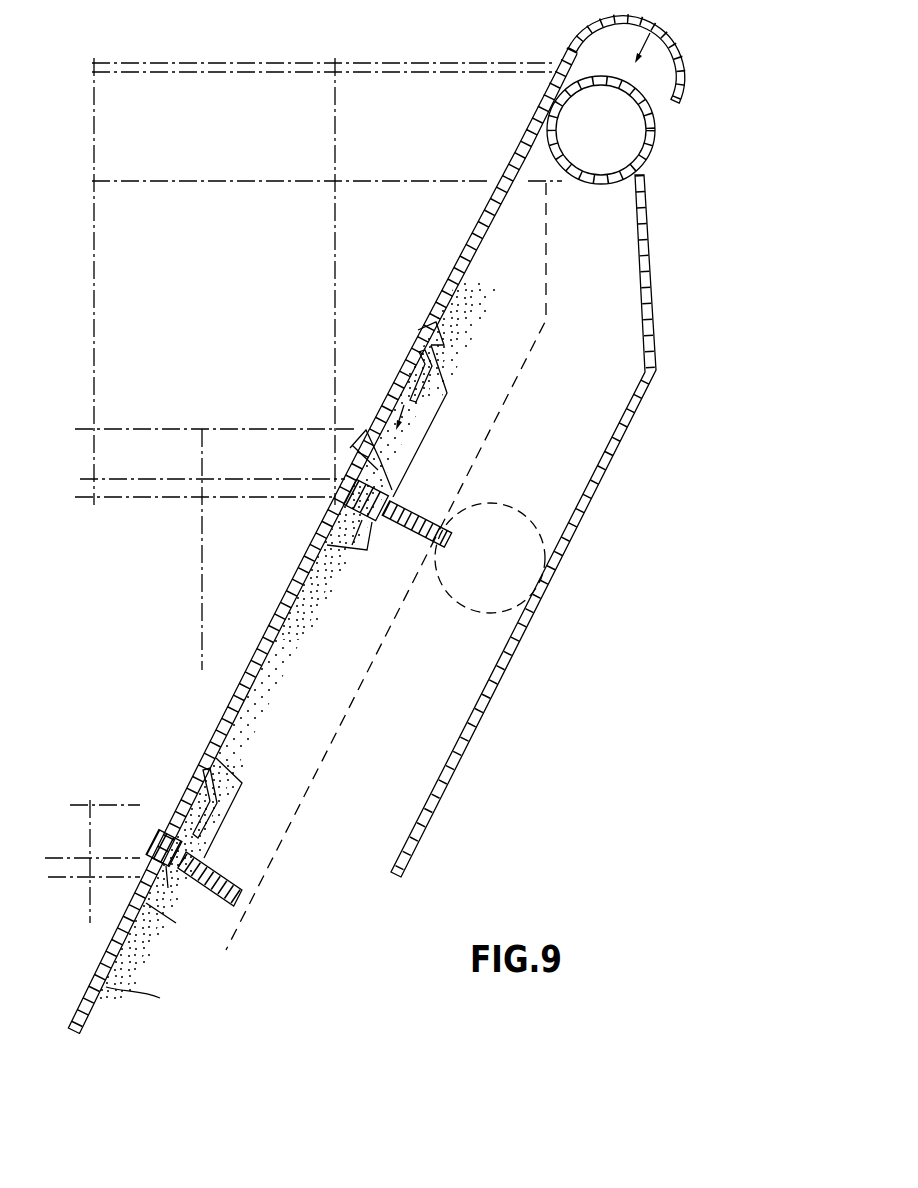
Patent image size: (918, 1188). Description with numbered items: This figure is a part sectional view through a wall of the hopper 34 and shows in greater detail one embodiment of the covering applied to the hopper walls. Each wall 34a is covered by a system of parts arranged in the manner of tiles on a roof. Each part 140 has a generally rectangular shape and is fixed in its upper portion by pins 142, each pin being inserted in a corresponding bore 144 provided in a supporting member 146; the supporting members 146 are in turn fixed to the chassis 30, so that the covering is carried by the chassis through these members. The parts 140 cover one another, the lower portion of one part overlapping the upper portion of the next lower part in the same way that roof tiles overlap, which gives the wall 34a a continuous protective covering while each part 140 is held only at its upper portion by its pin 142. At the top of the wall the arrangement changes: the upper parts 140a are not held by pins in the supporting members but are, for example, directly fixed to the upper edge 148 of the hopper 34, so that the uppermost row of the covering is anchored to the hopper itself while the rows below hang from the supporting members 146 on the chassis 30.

The hopper 34 is at (243, 92).
The wall 34a is at (582, 518).
The chassis 30 is at (460, 603).
The part 140 is at (212, 742).
The upper part 140a is at (443, 290).
The pin 142 is at (370, 540).
The bore 144 is at (350, 500).
The supporting member 146 is at (425, 510).
The upper edge 148 is at (640, 132).